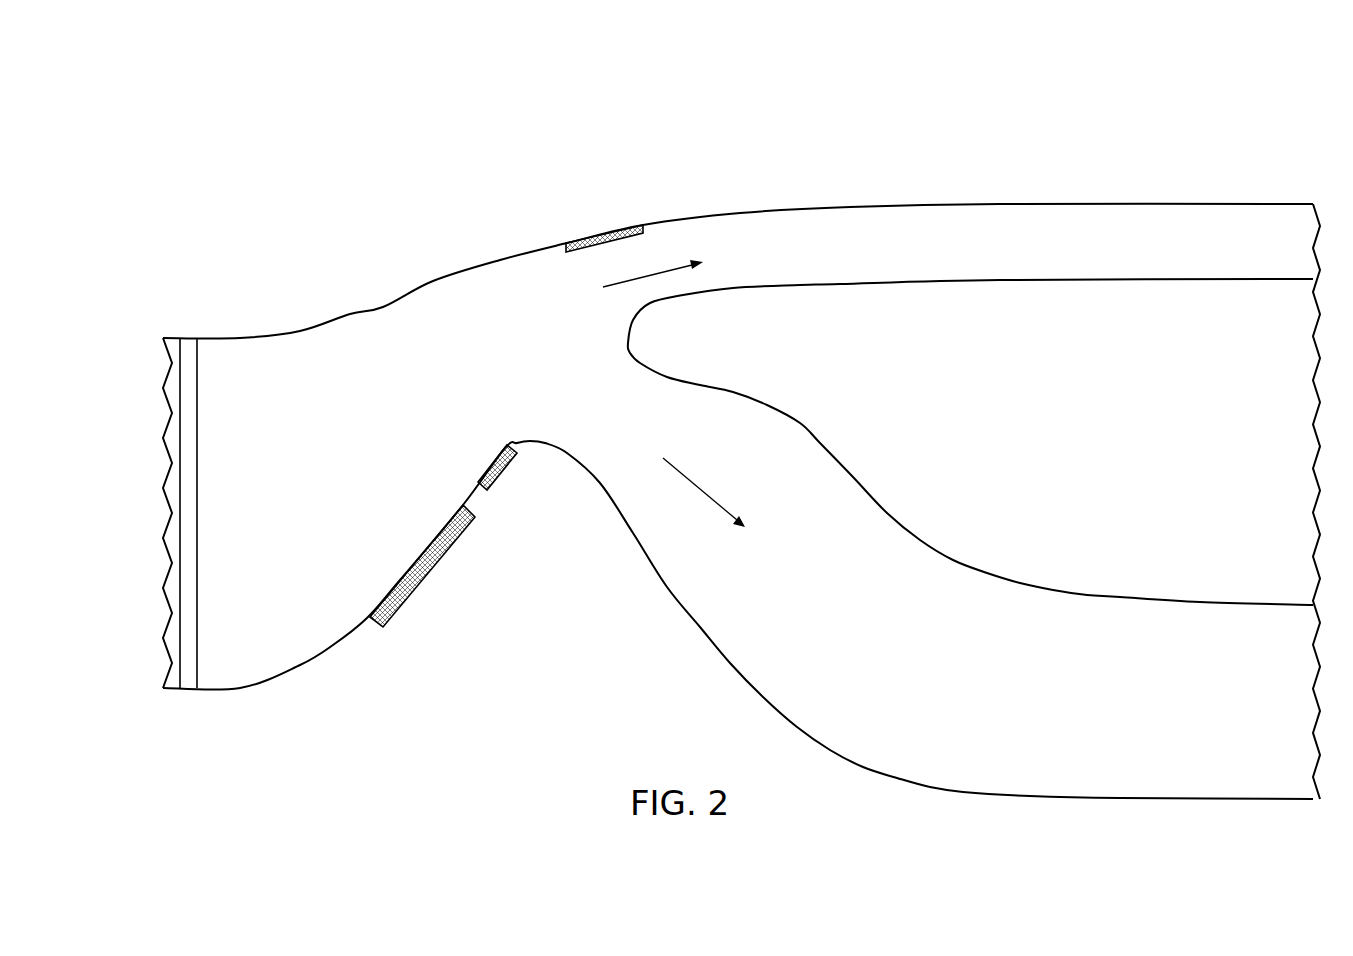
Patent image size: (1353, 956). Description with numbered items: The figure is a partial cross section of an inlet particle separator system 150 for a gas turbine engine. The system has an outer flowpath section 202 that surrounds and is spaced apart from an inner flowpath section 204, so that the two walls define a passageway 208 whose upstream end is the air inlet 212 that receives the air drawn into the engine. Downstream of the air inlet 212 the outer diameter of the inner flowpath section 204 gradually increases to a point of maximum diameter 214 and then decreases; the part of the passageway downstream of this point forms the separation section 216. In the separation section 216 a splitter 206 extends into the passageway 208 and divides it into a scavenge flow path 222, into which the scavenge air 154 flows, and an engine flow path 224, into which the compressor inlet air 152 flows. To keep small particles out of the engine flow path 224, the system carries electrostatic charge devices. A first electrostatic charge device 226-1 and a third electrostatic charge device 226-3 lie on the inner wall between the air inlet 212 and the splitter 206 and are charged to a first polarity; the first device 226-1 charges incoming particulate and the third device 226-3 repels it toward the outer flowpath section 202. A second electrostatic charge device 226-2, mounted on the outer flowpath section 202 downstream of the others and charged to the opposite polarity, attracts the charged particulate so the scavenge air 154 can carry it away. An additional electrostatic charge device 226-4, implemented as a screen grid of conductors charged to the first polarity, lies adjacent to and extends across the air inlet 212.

The inlet particle separator system 150 is at (208, 168).
The compressor inlet air 152 is at (700, 488).
The scavenge air 154 is at (653, 268).
The outer flowpath section 202 is at (384, 308).
The inner flowpath section 204 is at (307, 665).
The splitter 206 is at (628, 343).
The passageway 208 is at (320, 500).
The air inlet 212 is at (150, 535).
The point of maximum diameter 214 is at (535, 438).
The separation section 216 is at (486, 314).
The scavenge flow path 222 is at (849, 262).
The engine flow path 224 is at (862, 619).
The first electrostatic charge device 226-1 is at (445, 555).
The second electrostatic charge device 226-2 is at (602, 235).
The third electrostatic charge device 226-3 is at (513, 461).
The electrostatic charge device 226-4 is at (198, 427).